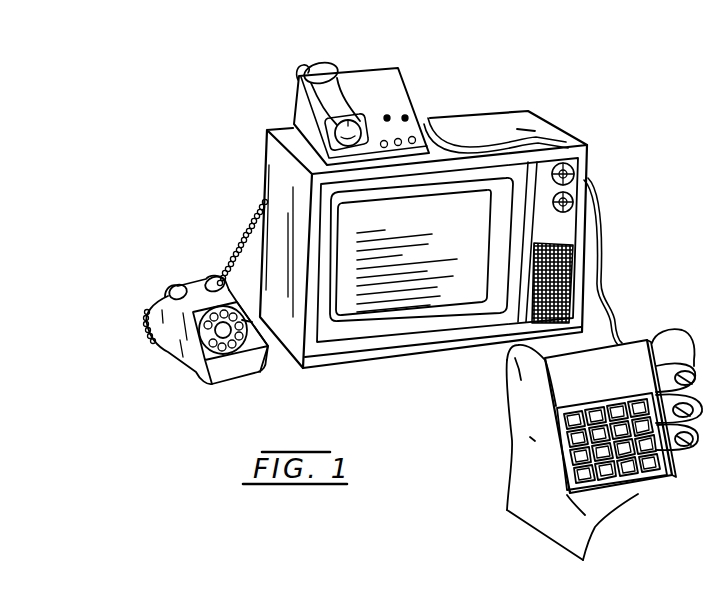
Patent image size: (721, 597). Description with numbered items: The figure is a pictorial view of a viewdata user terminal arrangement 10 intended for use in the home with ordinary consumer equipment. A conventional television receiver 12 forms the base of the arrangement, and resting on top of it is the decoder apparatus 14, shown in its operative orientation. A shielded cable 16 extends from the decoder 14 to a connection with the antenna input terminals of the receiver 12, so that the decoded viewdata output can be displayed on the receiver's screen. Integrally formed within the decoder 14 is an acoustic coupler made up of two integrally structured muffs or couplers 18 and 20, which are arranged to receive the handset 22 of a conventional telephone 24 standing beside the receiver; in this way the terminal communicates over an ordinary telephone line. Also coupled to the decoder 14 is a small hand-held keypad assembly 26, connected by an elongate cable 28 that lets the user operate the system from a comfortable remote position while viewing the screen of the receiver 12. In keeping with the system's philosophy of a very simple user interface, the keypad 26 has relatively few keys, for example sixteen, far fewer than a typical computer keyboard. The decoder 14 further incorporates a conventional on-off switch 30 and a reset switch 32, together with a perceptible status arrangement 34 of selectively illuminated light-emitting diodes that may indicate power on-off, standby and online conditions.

The user terminal arrangement 10 is at (217, 134).
The television receiver 12 is at (532, 123).
The decoder apparatus 14 is at (405, 80).
The shielded cable 16 is at (428, 110).
The muff (acoustic coupler) 18 is at (298, 80).
The muff (acoustic coupler) 20 is at (325, 124).
The handset 22 is at (333, 63).
The telephone 24 is at (173, 304).
The hand-held keypad assembly 26 is at (630, 352).
The elongate cable 28 is at (603, 233).
The on-off switch 30 is at (387, 115).
The reset switch 32 is at (406, 115).
The perceptible status arrangement 34 is at (510, 126).